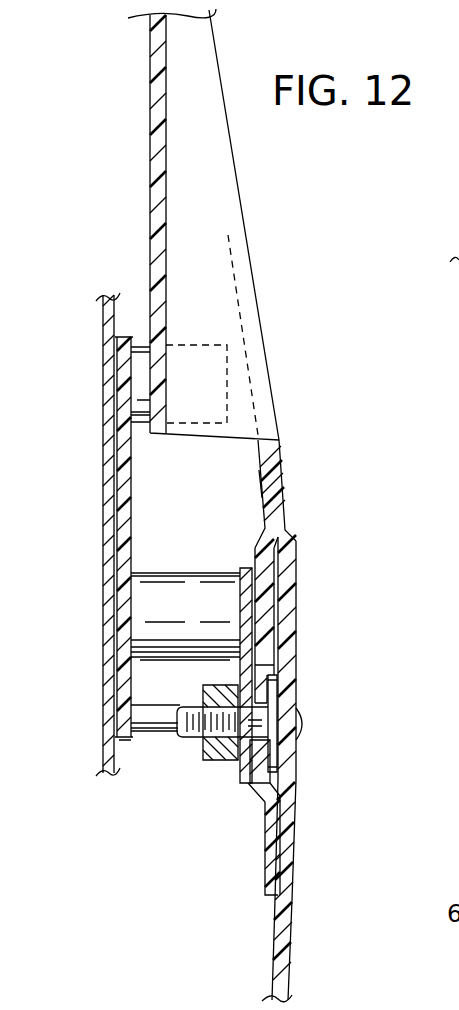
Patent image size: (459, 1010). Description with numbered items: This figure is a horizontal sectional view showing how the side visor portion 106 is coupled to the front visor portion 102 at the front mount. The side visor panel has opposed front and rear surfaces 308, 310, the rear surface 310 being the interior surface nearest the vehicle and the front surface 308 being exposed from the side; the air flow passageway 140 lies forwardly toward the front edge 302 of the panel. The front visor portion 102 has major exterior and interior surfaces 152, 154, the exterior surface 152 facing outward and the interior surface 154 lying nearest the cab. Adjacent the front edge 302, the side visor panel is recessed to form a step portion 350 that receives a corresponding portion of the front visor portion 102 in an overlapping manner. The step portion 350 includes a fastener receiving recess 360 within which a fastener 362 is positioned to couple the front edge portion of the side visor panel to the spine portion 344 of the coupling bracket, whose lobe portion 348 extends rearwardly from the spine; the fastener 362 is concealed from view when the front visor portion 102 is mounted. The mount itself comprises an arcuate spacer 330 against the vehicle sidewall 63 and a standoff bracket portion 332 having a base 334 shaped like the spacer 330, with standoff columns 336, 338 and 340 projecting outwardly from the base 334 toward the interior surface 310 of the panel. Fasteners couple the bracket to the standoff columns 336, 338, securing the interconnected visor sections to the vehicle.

The sidewall 63 is at (103, 695).
The front visor portion 102 is at (292, 962).
The side sun visor portion 106 is at (283, 467).
The air flow passageway 140 is at (227, 439).
The exterior surface 152 is at (295, 897).
The interior surface 154 is at (276, 932).
The front edge 302 is at (277, 895).
The front surface 308 is at (285, 512).
The rear surface 310 is at (263, 483).
The arcuate spacer 330 is at (110, 462).
The standoff bracket portion 332 is at (133, 491).
The base 334 is at (125, 741).
The standoff column 336 is at (155, 718).
The standoff column 338 is at (143, 602).
The standoff column 340 is at (138, 385).
The spine portion 344 is at (243, 783).
The lobe portion 348 is at (240, 577).
The recessed or step portion 350 is at (292, 610).
The fastener receiving recess 360 is at (288, 772).
The fastener 362 is at (270, 688).